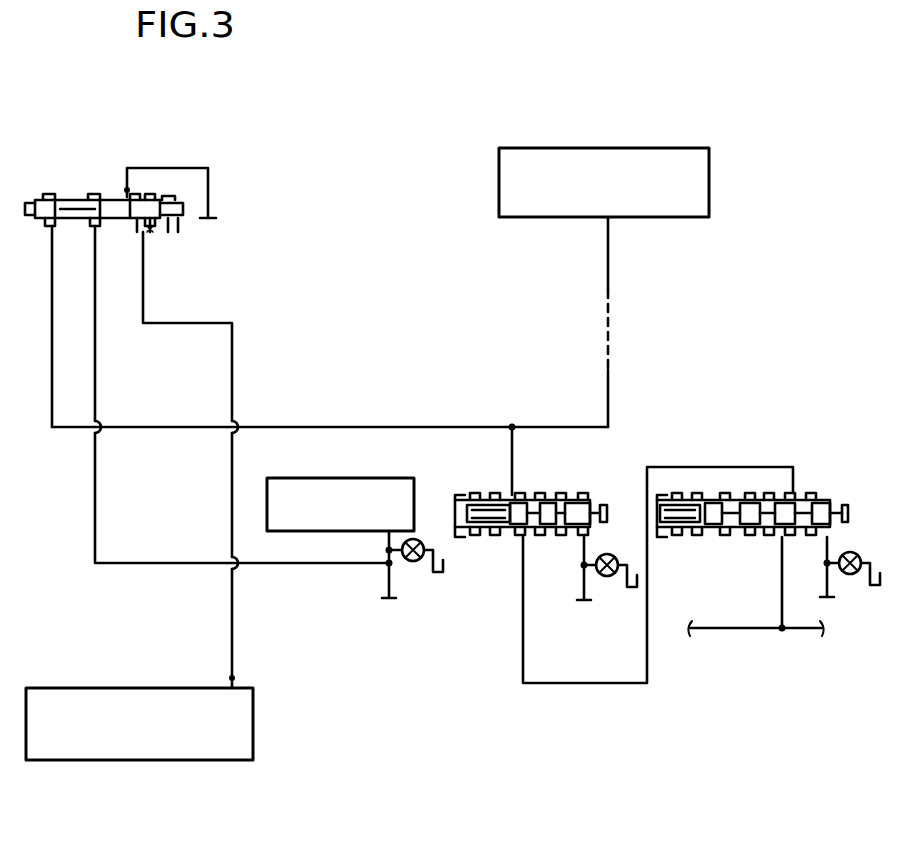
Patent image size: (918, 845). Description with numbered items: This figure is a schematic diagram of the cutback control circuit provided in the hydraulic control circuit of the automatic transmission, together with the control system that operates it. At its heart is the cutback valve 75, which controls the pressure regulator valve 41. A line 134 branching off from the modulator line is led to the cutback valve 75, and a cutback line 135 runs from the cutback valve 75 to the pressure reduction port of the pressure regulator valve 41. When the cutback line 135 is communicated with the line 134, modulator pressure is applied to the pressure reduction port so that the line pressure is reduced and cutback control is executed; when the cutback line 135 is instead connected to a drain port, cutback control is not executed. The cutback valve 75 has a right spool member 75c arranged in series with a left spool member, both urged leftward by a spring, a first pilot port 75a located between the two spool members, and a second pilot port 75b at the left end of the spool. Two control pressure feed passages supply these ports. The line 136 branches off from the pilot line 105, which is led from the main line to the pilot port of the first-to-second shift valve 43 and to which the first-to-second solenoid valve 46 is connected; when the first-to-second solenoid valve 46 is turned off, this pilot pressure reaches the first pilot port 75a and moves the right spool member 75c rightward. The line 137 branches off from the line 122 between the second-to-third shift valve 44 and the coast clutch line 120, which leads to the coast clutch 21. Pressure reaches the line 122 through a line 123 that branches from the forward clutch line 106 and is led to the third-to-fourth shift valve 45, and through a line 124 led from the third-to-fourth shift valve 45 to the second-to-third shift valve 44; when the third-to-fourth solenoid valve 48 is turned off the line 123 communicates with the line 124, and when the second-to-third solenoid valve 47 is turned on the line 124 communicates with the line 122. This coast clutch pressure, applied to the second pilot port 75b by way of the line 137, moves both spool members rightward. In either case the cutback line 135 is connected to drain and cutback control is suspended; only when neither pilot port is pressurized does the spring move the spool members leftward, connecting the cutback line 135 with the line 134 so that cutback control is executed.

The cutback valve 75 is at (40, 190).
The first pilot port 75a is at (97, 225).
The second pilot port 75b is at (43, 224).
The right spool member 75c is at (82, 203).
The line 134 is at (187, 168).
The cutback line 135 is at (232, 365).
The line 136 is at (165, 563).
The line 137 is at (378, 427).
The line 122 is at (560, 427).
The coast clutch line 120 is at (608, 245).
The coast clutch 21 is at (670, 148).
The 1-2 shift valve 43 is at (313, 478).
The pilot line 105 is at (389, 578).
The 1-2 solenoid valve 46 is at (415, 562).
The 2-3 shift valve 44 is at (589, 493).
The 2-3 solenoid valve 47 is at (607, 577).
The line 124 is at (568, 683).
The 3-4 shift valve 45 is at (836, 492).
The line 123 is at (782, 565).
The forward clutch line 106 is at (728, 628).
The 3-4 solenoid valve 48 is at (850, 575).
The pressure regulator valve 41 is at (212, 760).